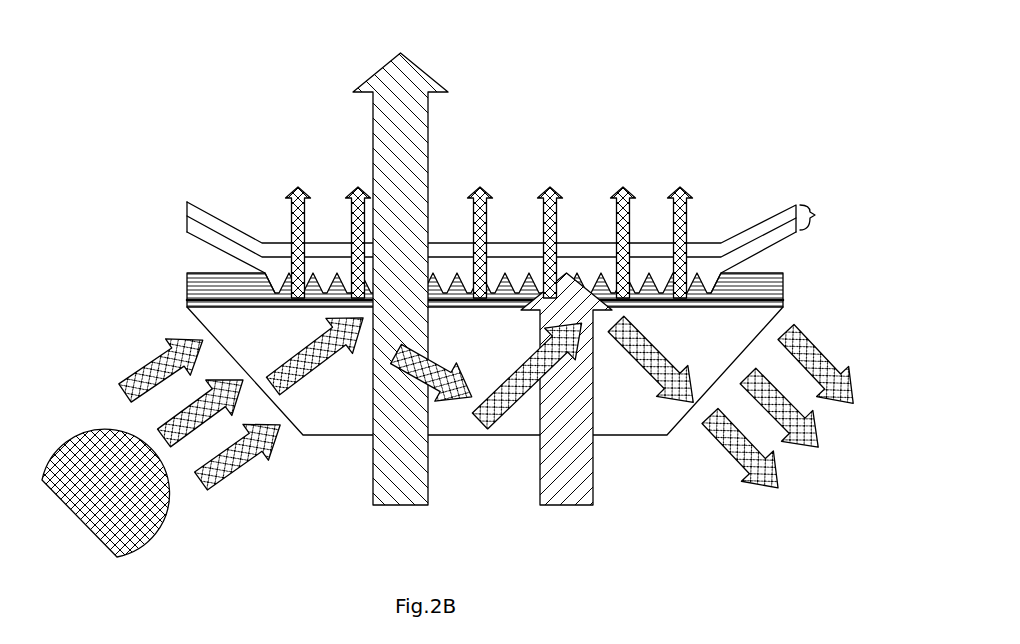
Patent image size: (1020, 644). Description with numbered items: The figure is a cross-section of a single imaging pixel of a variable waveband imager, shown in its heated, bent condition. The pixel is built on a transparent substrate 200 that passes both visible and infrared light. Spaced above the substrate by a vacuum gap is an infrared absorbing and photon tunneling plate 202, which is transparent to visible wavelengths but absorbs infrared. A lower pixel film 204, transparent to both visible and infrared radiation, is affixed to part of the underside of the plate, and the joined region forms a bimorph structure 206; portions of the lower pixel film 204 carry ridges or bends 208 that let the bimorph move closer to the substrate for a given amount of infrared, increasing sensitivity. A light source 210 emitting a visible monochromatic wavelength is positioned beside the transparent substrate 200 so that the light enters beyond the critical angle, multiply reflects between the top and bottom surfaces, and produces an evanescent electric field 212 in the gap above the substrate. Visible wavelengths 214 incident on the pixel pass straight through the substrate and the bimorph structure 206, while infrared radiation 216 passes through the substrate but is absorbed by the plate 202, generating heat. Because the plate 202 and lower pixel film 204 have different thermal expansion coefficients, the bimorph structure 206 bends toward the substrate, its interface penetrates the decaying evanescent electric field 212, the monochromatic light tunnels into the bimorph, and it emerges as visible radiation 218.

The transparent substrate 200 is at (658, 437).
The infrared absorbing and photon tunneling plate 202 is at (199, 202).
The lower pixel film 204 is at (202, 238).
The bimorph structure 206 is at (815, 215).
The ridges or bends 208 is at (753, 272).
The light source 210 is at (86, 434).
The evanescent electric field 212 is at (783, 287).
The visible wavelengths 214 is at (398, 507).
The infrared radiation 216 is at (567, 507).
The visible radiation 218 is at (543, 221).